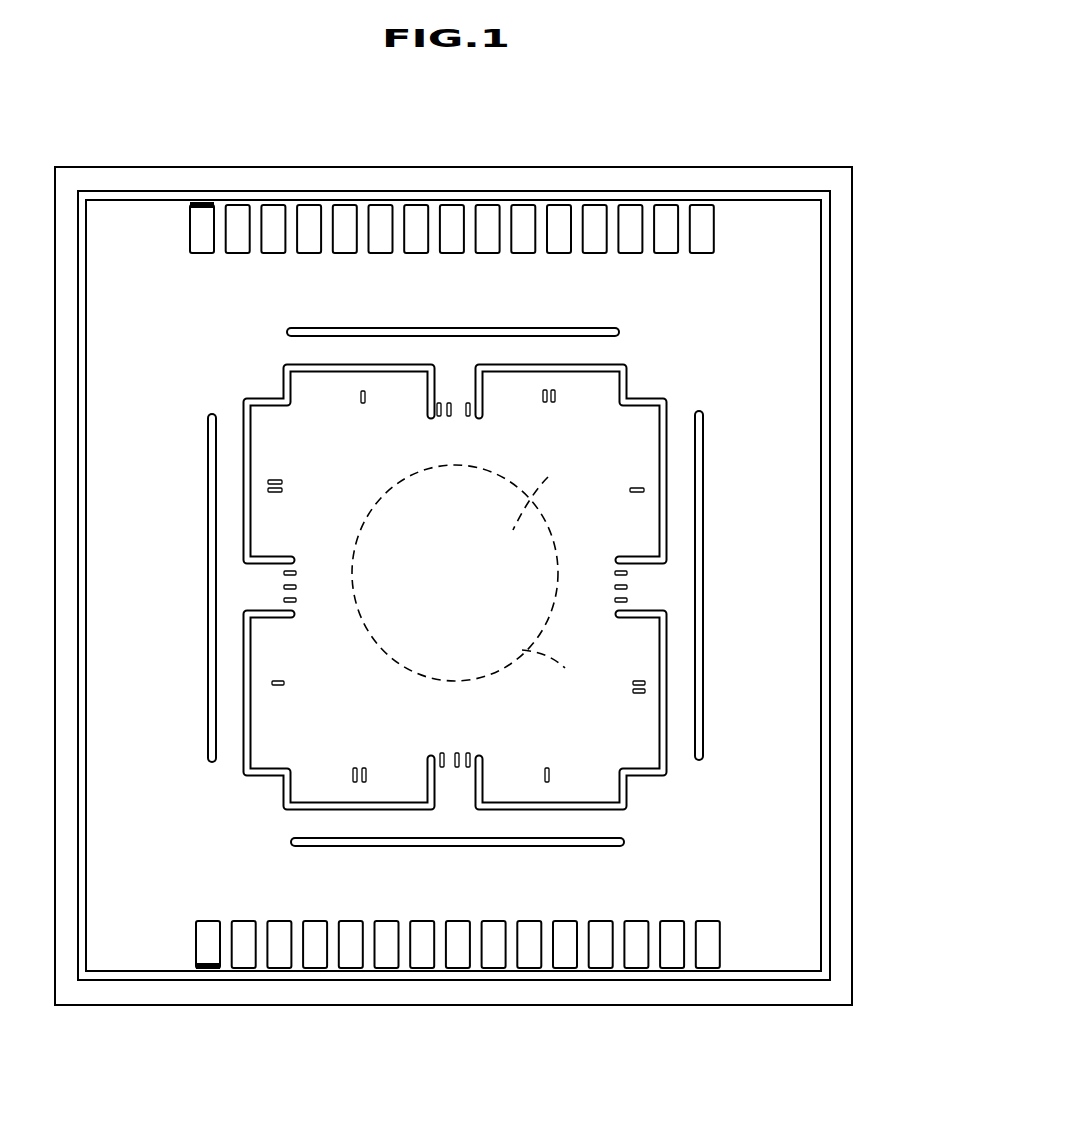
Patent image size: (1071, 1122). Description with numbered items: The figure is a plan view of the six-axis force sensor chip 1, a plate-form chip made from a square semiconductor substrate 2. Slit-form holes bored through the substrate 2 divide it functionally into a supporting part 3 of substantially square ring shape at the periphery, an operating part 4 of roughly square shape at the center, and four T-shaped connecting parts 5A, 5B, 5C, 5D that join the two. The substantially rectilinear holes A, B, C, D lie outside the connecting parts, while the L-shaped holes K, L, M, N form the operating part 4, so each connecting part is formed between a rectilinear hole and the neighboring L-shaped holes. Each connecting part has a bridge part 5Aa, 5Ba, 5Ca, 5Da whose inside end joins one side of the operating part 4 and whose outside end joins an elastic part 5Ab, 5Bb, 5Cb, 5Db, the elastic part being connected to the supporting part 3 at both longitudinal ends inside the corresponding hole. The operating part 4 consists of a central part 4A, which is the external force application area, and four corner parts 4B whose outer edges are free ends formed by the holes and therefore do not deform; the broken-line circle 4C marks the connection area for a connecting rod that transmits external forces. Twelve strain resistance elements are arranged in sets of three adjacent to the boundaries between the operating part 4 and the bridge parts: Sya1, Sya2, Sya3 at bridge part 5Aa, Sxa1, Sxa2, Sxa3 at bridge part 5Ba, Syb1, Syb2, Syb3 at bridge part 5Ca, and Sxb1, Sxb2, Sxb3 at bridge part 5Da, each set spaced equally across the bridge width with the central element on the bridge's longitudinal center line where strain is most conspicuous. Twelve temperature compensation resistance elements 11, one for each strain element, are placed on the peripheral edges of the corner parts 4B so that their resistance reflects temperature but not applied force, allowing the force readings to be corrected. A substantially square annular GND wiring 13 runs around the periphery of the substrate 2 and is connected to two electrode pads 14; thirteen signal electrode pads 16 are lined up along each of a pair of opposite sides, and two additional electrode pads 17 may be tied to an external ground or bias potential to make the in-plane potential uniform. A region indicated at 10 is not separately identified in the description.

The six-axis force sensor chip 1 is at (744, 155).
The semiconductor substrate 2 is at (852, 230).
The supporting part 3 is at (803, 356).
The operating part 4 is at (467, 588).
The central part 4A is at (539, 500).
The corner parts 4B is at (270, 423).
The circle 4C is at (552, 677).
The connecting part 5A is at (455, 355).
The bridge part 5Aa is at (448, 387).
The elastic part 5Ab is at (368, 357).
The connecting part 5B is at (680, 587).
The bridge part 5Ba is at (643, 597).
The elastic part 5Bb is at (680, 468).
The connecting part 5C is at (457, 820).
The bridge part 5Ca is at (455, 786).
The elastic part 5Cb is at (372, 820).
The connecting part 5D is at (230, 588).
The bridge part 5Da is at (262, 588).
The elastic part 5Db is at (232, 708).
The sensor chip 10 is at (689, 321).
The temperature compensation resistance elements 11 is at (360, 397).
The GND wiring 13 is at (826, 290).
The electrode pads 14 is at (203, 218).
The signal electrode pads 16 is at (416, 218).
The additional electrode pads 17 is at (703, 218).
The hole A is at (585, 333).
The hole B is at (698, 533).
The hole C is at (585, 843).
The hole D is at (208, 534).
The hole K is at (285, 392).
The hole L is at (625, 390).
The hole M is at (623, 782).
The hole N is at (283, 782).
The strain resistance element Sxa1 is at (614, 600).
The strain resistance element Sxa2 is at (614, 587).
The strain resistance element Sxa3 is at (614, 573).
The strain resistance element Sxb1 is at (297, 573).
The strain resistance element Sxb2 is at (297, 587).
The strain resistance element Sxb3 is at (297, 600).
The strain resistance element Sya1 is at (468, 420).
The strain resistance element Sya2 is at (449, 420).
The strain resistance element Sya3 is at (439, 420).
The strain resistance element Syb1 is at (442, 752).
The strain resistance element Syb2 is at (457, 752).
The strain resistance element Syb3 is at (468, 752).